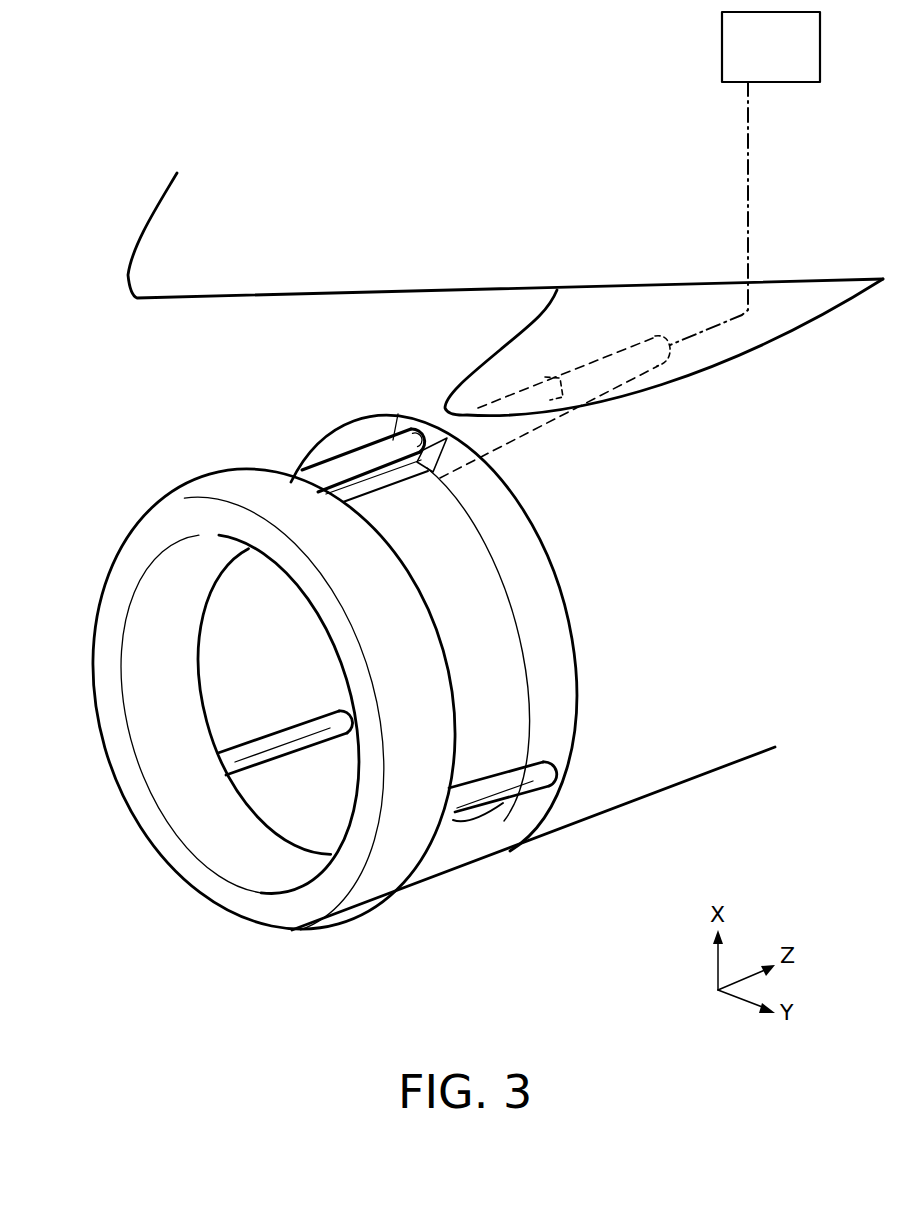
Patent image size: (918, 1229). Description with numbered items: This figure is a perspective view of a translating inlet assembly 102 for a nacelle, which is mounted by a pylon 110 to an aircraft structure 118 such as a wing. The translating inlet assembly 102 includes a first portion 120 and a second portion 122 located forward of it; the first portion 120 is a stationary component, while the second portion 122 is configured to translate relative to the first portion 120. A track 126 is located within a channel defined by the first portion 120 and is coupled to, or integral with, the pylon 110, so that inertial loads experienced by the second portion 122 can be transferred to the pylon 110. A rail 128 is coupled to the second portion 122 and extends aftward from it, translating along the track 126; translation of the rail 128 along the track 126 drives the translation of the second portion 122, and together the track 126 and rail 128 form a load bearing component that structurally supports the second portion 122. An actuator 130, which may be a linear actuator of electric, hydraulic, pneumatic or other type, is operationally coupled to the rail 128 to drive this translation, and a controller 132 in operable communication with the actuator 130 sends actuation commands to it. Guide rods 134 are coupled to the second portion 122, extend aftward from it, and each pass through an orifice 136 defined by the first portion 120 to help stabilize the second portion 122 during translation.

The translating inlet assembly 102 is at (148, 445).
The pylon 110 is at (745, 339).
The aircraft structure 118 is at (160, 265).
The first portion 120 is at (575, 810).
The second portion 122 is at (382, 890).
The track 126 is at (408, 418).
The rail 128 is at (370, 452).
The actuator 130 is at (611, 360).
The controller 132 is at (790, 62).
The guide rods 134 is at (235, 762).
The orifice 136 is at (320, 694).